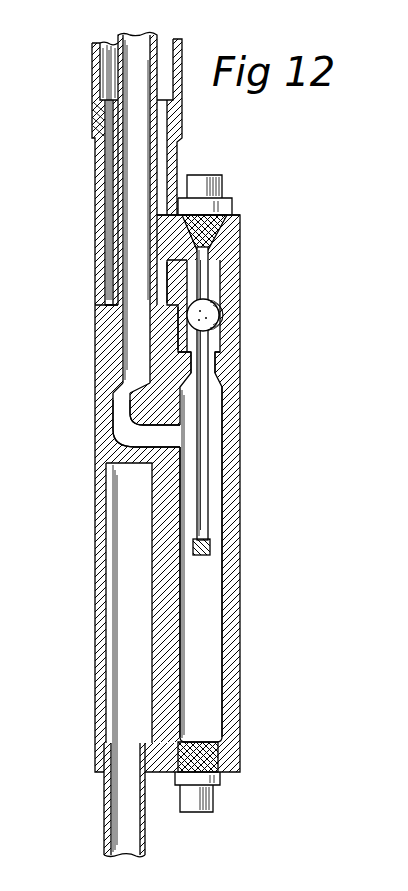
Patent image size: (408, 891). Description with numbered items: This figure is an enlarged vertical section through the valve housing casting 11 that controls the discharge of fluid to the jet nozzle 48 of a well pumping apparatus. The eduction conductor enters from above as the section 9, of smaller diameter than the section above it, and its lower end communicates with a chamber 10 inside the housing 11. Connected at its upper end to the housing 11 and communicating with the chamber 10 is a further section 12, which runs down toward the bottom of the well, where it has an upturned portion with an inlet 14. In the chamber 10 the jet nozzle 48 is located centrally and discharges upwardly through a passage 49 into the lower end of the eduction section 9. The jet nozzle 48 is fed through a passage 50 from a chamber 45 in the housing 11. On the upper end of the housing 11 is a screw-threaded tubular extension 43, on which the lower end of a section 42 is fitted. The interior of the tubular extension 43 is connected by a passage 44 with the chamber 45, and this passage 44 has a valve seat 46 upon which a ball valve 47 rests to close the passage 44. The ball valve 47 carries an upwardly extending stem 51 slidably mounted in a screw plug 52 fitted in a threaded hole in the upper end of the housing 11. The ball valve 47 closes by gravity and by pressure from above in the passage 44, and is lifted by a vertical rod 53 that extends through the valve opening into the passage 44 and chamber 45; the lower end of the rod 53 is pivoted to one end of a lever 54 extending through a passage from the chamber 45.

The section 9 is at (135, 33).
The chamber 10 is at (125, 493).
The valve housing casting 11 is at (99, 542).
The section 12 is at (122, 808).
The inlet 14 is at (272, 162).
The section 42 is at (92, 73).
The tubular extension 43 is at (96, 193).
The passage 44 is at (173, 282).
The chamber 45 is at (216, 457).
The valve seat 46 is at (222, 342).
The ball valve 47 is at (220, 316).
The jet nozzle 48 is at (123, 428).
The passage 49 is at (118, 369).
The passage 50 is at (165, 445).
The stem 51 is at (224, 250).
The screw plug 52 is at (240, 217).
The vertical rod 53 is at (204, 403).
The lever 54 is at (210, 546).